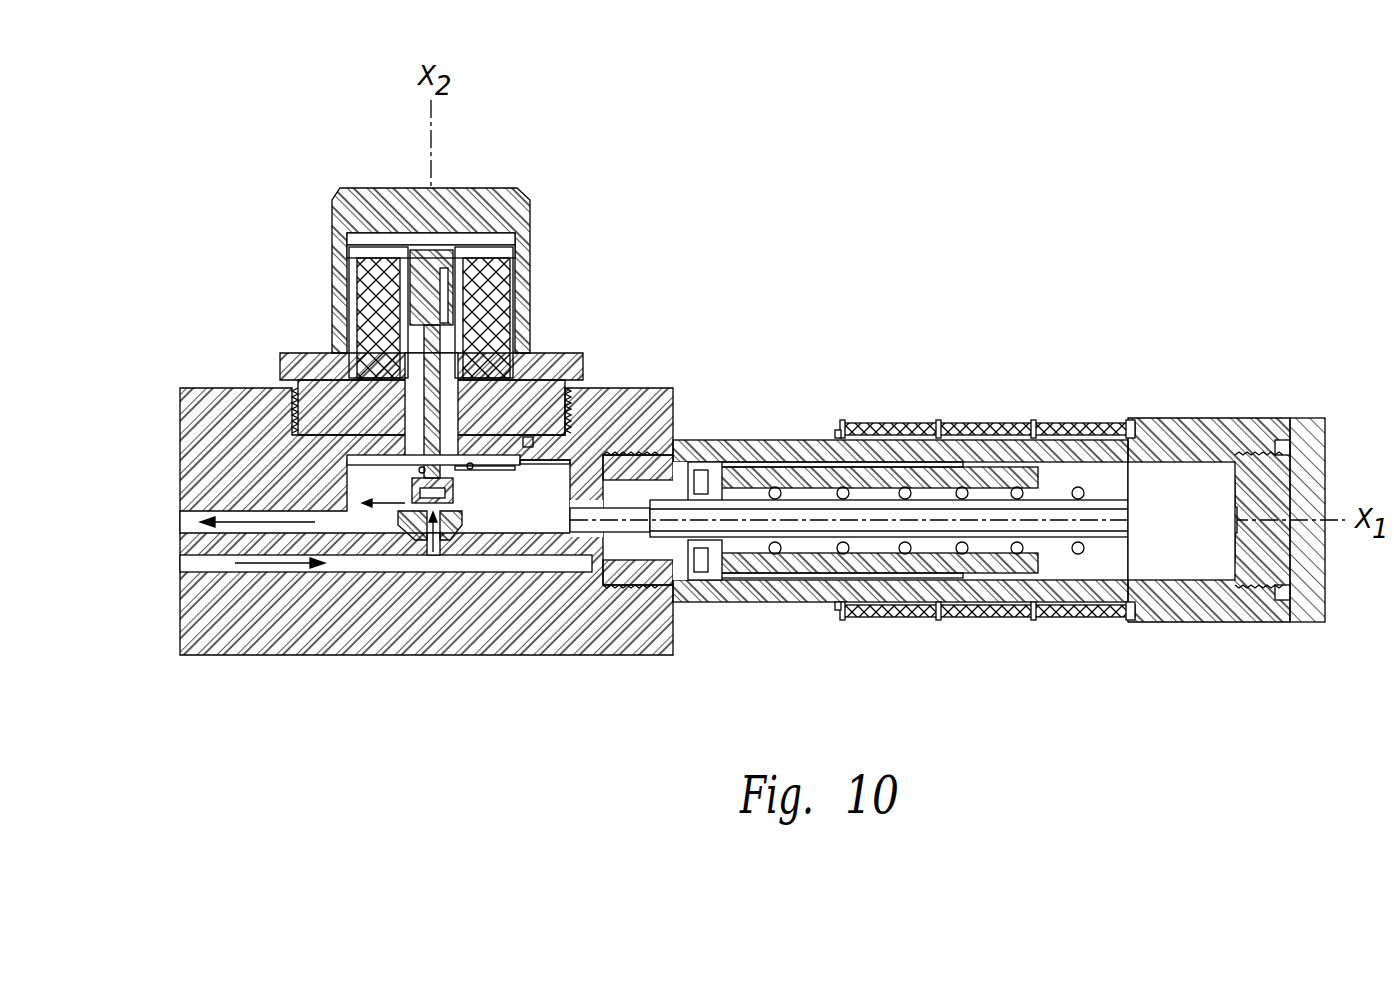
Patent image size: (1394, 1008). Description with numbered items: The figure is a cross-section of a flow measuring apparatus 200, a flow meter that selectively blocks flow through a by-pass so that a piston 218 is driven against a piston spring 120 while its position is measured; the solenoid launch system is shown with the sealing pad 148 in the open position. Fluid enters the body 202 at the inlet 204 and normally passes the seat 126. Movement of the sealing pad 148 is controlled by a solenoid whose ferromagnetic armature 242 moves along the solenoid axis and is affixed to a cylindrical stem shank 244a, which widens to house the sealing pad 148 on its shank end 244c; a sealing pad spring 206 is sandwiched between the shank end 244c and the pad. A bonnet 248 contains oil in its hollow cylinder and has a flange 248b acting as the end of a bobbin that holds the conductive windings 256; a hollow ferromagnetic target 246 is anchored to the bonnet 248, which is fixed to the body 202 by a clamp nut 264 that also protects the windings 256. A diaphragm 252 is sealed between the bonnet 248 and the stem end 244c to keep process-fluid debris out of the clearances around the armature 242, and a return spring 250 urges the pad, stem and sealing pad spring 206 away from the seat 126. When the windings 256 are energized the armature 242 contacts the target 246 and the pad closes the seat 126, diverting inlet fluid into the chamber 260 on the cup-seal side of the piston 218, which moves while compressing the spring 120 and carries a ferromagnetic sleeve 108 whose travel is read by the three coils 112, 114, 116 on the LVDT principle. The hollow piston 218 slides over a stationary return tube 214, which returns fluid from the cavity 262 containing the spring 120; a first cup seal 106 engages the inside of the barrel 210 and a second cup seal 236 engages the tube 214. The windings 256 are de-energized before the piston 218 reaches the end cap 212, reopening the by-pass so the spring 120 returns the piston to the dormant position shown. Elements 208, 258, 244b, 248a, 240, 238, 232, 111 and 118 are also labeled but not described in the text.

The flow measuring apparatus 200 is at (915, 215).
The body 202 is at (230, 654).
The inlet 204 is at (178, 563).
The sealing pad spring 206 is at (355, 380).
The outlet passage 208 is at (178, 522).
The seat 126 is at (405, 545).
The sealing pad 148 is at (445, 515).
The valve seat 258 is at (352, 510).
The armature 242 is at (455, 300).
The stem shank 244a is at (470, 320).
The spring 244b is at (480, 470).
The shank end 244c is at (412, 496).
The target 246 is at (505, 237).
The bonnet 248 is at (530, 440).
The plate 248a is at (400, 460).
The flange 248b is at (396, 245).
The return spring 250 is at (535, 466).
The diaphragm 252 is at (585, 535).
The conductive windings 256 is at (362, 288).
The cavity 262 is at (418, 470).
The clamp nut 264 is at (565, 365).
The fitting 240 is at (630, 505).
The seal 238 is at (700, 465).
The second cup seal 236 is at (723, 578).
The chamber 260 is at (690, 548).
The tube 232 is at (785, 440).
The piston 218 is at (1030, 480).
The piston spring 120 is at (1175, 500).
The stationary return tube 214 is at (1222, 480).
The barrel 210 is at (1198, 622).
The end cap 212 is at (1312, 598).
The first cup seal 106 is at (760, 440).
The ferromagnetic sleeve 108 is at (982, 470).
The coil winding 111 is at (848, 618).
The coil 112 is at (880, 620).
The coil 114 is at (1000, 620).
The coil 116 is at (1060, 620).
The tab 118 is at (838, 606).